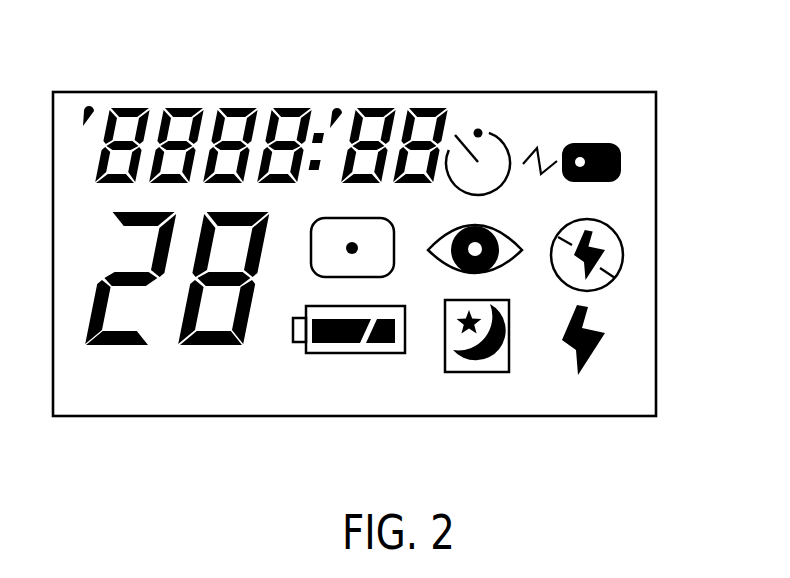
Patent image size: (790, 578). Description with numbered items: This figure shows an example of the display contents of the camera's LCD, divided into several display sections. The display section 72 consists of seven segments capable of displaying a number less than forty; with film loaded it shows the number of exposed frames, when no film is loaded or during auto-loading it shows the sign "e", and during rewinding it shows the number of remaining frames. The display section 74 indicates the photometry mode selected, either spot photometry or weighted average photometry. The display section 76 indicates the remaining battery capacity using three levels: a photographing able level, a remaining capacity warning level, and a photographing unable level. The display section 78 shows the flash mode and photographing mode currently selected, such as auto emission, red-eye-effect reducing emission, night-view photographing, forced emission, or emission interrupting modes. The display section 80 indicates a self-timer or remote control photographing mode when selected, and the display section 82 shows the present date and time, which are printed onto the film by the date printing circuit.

The display section 72 is at (241, 430).
The display section 74 is at (312, 247).
The display section 76 is at (352, 354).
The display section 78 is at (672, 218).
The display section 80 is at (470, 83).
The display section 82 is at (105, 83).